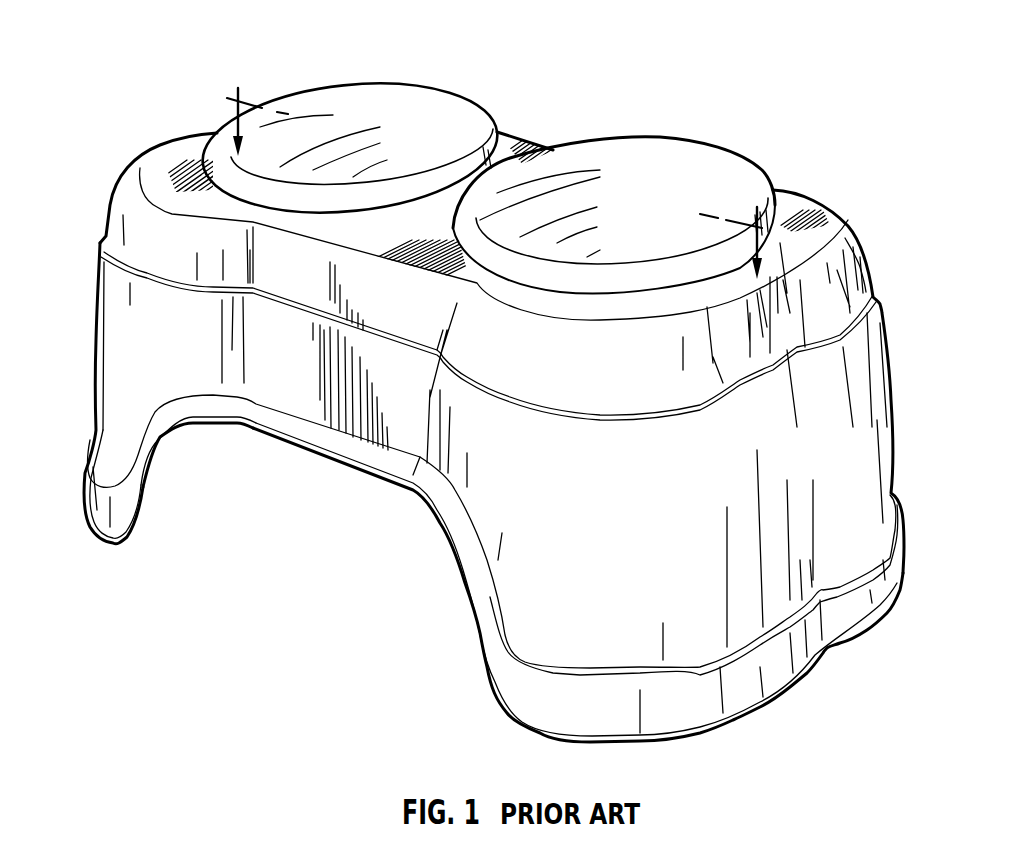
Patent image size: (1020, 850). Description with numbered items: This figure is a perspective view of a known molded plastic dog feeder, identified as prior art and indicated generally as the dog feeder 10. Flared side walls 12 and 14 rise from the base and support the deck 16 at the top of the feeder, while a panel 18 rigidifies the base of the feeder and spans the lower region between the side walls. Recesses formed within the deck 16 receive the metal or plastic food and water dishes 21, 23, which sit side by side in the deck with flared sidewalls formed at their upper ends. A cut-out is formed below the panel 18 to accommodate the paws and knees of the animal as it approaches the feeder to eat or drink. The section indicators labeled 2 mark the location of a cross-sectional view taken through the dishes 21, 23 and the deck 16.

The dog feeder 10 is at (312, 482).
The flared side wall 12 is at (873, 373).
The flared side wall 14 is at (112, 391).
The deck 16 is at (522, 150).
The panel 18 is at (272, 388).
The food and water dish 21 is at (360, 93).
The food and water dish 23 is at (695, 154).
The section line 2- 2 is at (484, 169).